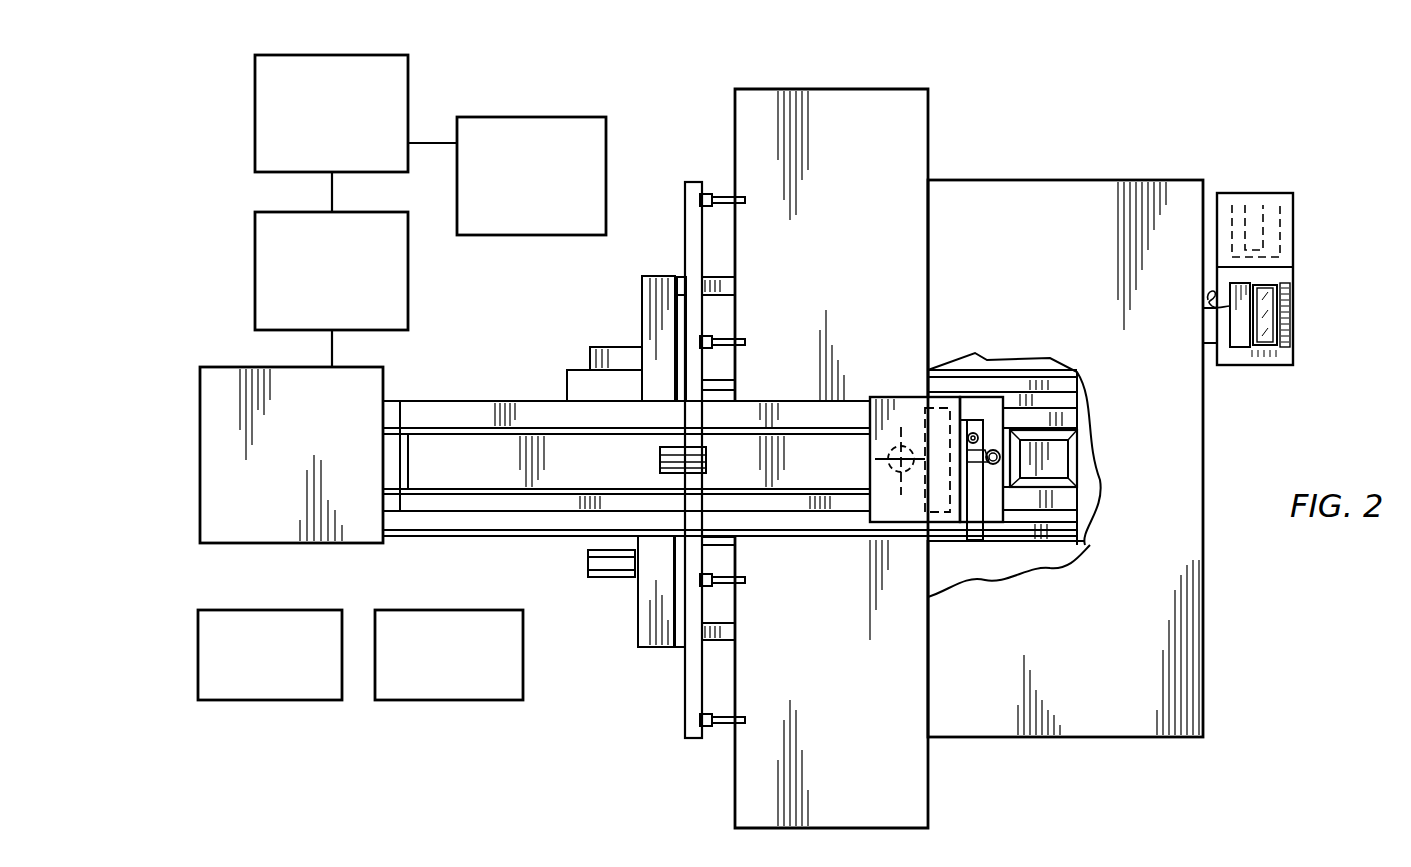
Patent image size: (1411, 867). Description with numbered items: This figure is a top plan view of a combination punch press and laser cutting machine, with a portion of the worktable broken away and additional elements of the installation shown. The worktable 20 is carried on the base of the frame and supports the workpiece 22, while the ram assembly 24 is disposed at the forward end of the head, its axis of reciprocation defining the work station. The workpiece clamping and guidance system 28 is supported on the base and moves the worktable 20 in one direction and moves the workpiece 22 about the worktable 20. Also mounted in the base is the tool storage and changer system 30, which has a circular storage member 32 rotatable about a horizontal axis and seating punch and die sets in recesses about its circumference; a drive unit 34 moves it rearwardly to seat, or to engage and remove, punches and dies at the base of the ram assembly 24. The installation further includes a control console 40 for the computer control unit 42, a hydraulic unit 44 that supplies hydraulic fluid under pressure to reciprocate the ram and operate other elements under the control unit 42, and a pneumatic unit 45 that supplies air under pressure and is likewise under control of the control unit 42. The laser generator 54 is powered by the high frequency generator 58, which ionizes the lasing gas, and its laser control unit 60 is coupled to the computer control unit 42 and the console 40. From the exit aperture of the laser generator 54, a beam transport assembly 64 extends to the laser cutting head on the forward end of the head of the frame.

The worktable 20 is at (1097, 205).
The workpiece 22 is at (848, 115).
The ram assembly 24 is at (900, 420).
The workpiece clamping and guidance system 28 is at (686, 680).
The tool storage and changer system 30 is at (1002, 475).
The circular storage member 32 is at (993, 498).
The drive unit 34 is at (1050, 468).
The control console 40 is at (1293, 270).
The computer control unit 42 is at (557, 117).
The hydraulic unit 44 is at (523, 667).
The pneumatic unit 45 is at (295, 700).
The laser generator 54 is at (340, 490).
The high frequency generator 58 is at (409, 306).
The laser control unit 60 is at (409, 91).
The beam transport assembly 64 is at (548, 536).